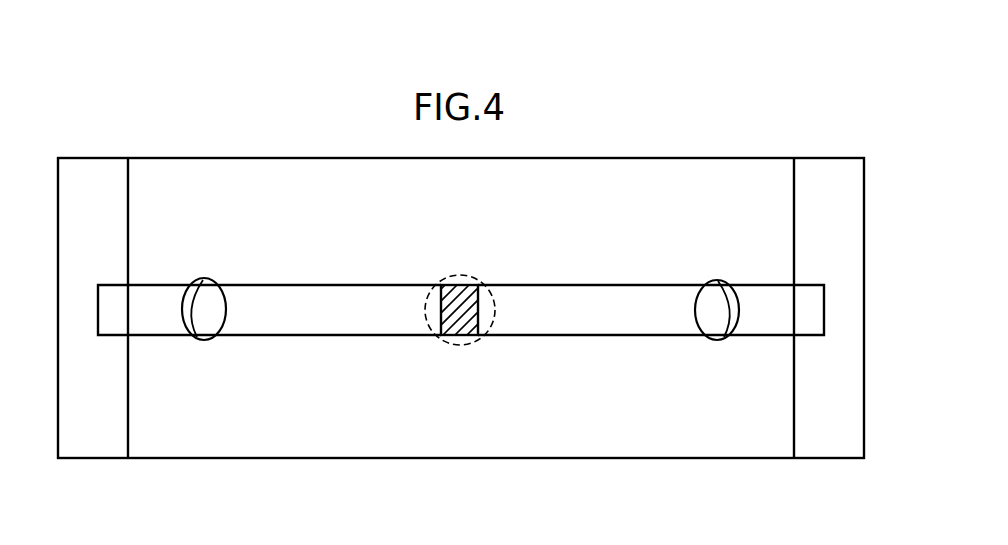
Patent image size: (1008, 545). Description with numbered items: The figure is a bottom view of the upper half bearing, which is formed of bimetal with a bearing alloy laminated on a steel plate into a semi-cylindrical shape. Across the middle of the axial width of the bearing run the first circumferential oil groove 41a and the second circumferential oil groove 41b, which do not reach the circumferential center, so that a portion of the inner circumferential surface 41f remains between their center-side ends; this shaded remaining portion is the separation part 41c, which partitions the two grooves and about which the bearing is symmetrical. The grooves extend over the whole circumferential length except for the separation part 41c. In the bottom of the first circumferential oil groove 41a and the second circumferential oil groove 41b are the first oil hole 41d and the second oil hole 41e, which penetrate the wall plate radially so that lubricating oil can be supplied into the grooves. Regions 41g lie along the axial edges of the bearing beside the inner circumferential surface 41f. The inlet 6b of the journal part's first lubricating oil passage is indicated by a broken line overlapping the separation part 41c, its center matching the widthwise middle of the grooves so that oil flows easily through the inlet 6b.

The first circumferential oil groove 41a is at (347, 321).
The second circumferential oil groove 41b is at (614, 321).
The separation part 41c is at (460, 322).
The first oil hole 41d is at (199, 316).
The second oil hole 41e is at (722, 316).
The inner circumferential surface 41f is at (677, 222).
The side region 41g is at (113, 228).
The inlet 6b is at (462, 277).